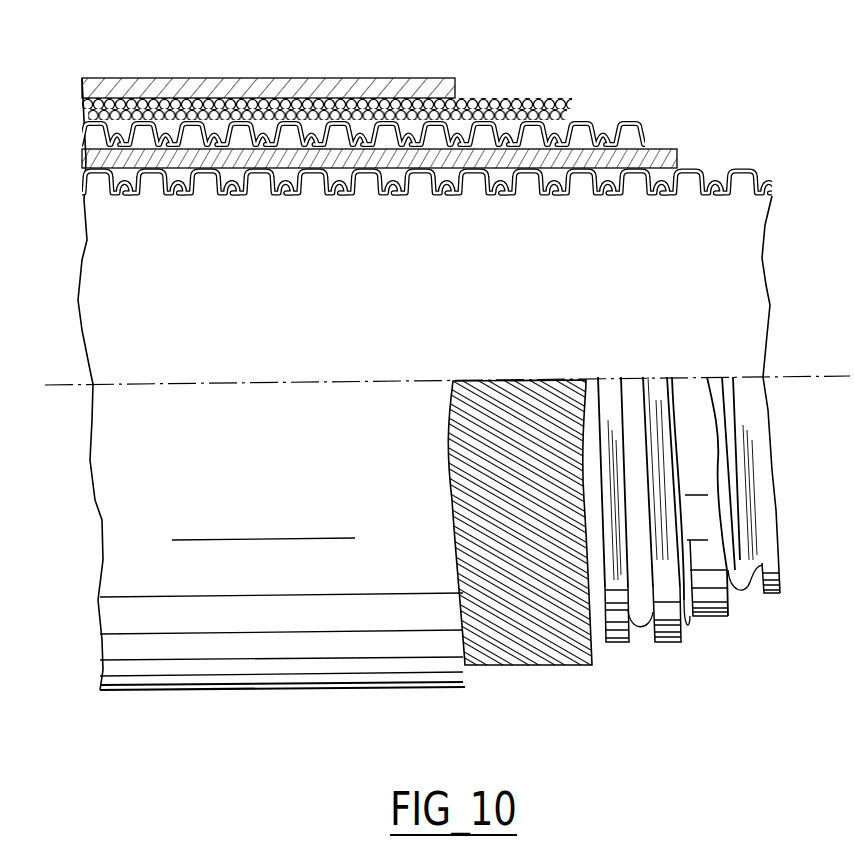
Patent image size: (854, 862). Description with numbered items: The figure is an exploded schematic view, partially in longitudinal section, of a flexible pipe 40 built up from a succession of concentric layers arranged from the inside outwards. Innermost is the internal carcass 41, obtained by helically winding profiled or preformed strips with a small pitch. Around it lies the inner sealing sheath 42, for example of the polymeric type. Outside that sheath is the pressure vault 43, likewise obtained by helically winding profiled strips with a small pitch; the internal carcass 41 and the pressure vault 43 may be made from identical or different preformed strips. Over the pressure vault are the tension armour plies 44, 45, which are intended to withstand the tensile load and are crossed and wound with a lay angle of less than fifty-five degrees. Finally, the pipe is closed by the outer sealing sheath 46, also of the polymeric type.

The flexible pipe 40 is at (440, 355).
The internal carcass 41 is at (688, 196).
The inner sealing sheath 42 is at (667, 145).
The pressure vault 43 is at (583, 126).
The tension armour ply 44 is at (567, 110).
The tension armour ply 45 is at (510, 100).
The outer sealing sheath 46 is at (355, 90).